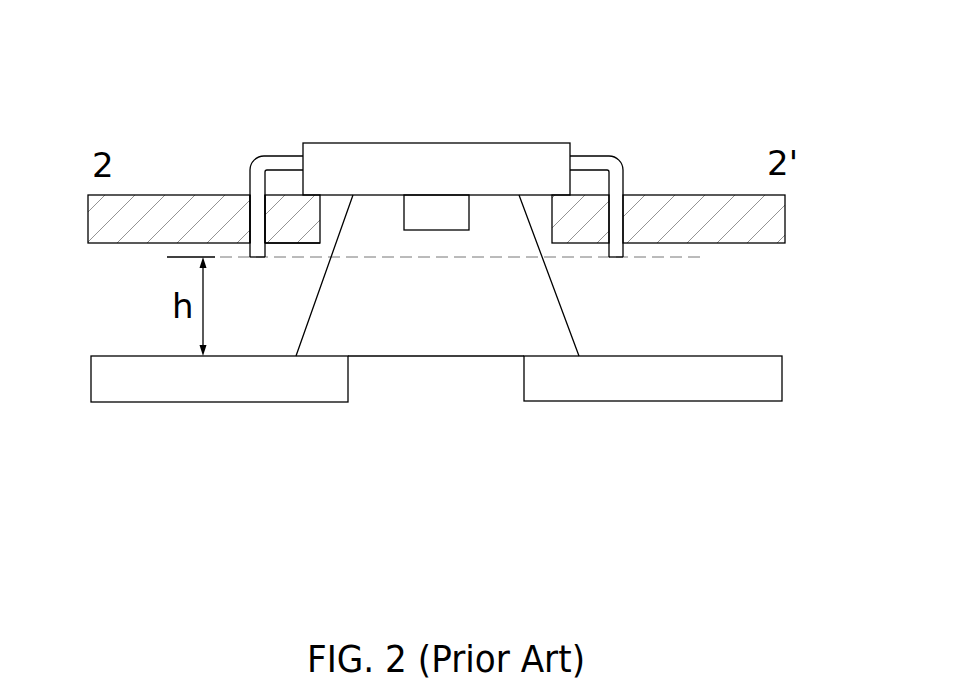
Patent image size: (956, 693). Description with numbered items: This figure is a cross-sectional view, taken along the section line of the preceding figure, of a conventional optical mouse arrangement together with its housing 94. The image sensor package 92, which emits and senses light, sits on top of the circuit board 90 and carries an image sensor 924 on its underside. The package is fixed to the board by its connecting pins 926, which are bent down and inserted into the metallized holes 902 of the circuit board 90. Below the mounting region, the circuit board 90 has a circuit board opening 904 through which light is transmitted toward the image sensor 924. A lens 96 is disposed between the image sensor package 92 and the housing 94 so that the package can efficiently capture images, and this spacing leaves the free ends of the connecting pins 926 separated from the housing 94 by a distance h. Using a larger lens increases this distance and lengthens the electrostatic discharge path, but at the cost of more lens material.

The circuit board 90 is at (640, 203).
The metallized holes 902 is at (248, 191).
The circuit board opening 904 is at (326, 246).
The image sensor package 92 is at (503, 143).
The image sensor 924 is at (453, 230).
The connecting pins 926 is at (277, 158).
The housing 94 is at (593, 377).
The lens 96 is at (457, 333).